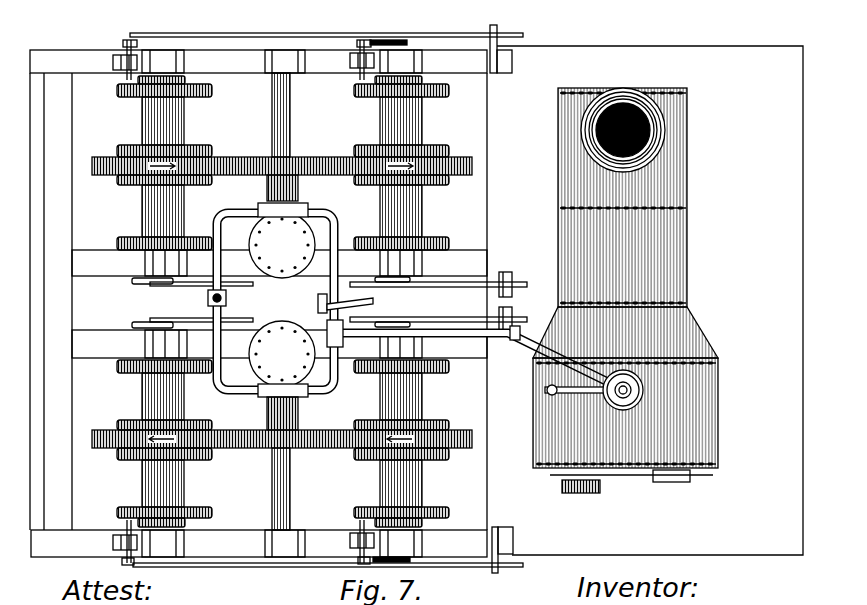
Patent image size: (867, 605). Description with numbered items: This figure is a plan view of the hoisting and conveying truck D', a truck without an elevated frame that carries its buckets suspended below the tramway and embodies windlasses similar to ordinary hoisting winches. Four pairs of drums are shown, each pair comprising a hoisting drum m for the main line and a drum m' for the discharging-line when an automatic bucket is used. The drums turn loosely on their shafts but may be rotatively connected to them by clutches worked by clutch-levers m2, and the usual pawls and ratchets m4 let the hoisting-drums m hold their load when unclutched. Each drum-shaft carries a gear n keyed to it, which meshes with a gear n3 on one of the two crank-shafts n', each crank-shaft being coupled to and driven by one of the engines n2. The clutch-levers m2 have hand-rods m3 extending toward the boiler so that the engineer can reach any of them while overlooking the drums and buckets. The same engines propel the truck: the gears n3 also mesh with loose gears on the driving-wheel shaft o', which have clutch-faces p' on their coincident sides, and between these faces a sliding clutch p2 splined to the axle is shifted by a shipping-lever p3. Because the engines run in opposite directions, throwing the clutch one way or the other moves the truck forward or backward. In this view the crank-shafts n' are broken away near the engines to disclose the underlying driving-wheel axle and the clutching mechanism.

The hoisting drum m is at (295, 302).
The discharging-line drum m' is at (282, 297).
The clutch lever m2 is at (386, 42).
The hand-rod m3 is at (337, 299).
The pawl and ratchet m4 is at (441, 518).
The drum-shaft gear n is at (275, 297).
The crank-shaft n' is at (292, 301).
The engine n2 is at (282, 299).
The crank-shaft gear n3 is at (282, 304).
The driving-wheel shaft o' is at (296, 302).
The clutch-face p' is at (303, 298).
The sliding clutch p2 is at (266, 404).
The shipping-lever p3 is at (345, 307).
The hoisting and conveying truck D' is at (607, 290).